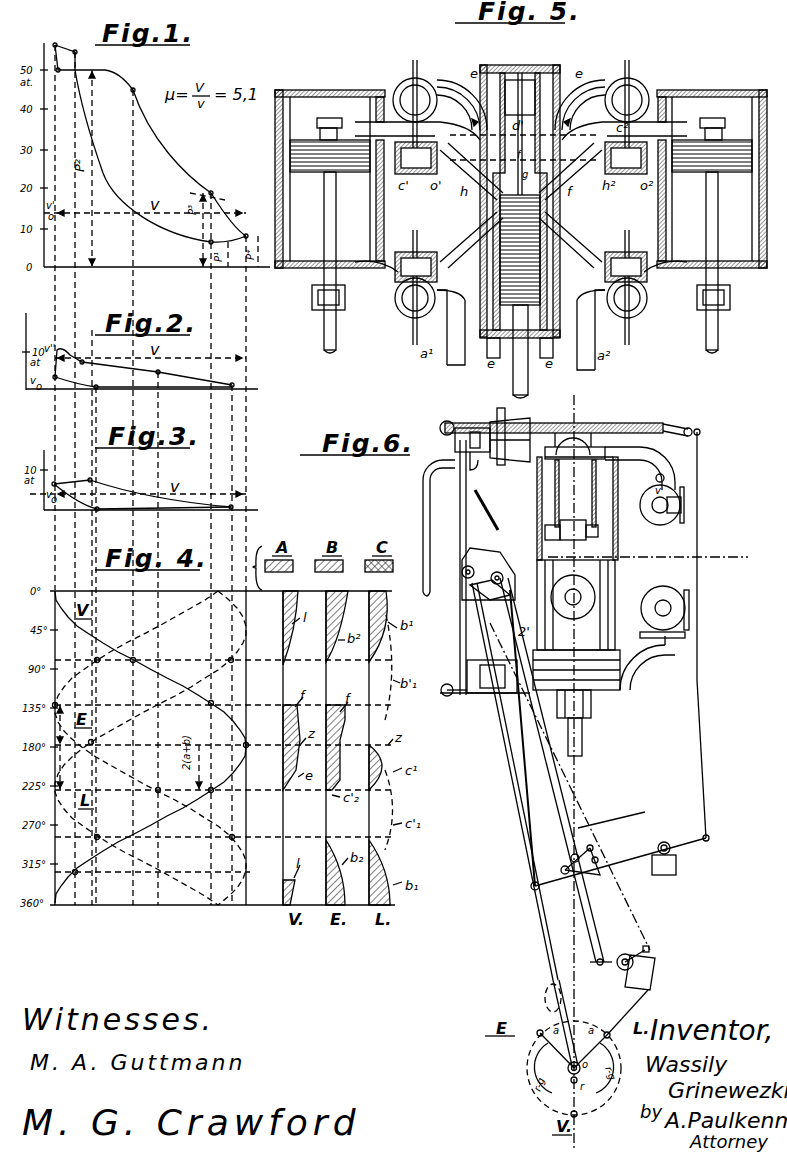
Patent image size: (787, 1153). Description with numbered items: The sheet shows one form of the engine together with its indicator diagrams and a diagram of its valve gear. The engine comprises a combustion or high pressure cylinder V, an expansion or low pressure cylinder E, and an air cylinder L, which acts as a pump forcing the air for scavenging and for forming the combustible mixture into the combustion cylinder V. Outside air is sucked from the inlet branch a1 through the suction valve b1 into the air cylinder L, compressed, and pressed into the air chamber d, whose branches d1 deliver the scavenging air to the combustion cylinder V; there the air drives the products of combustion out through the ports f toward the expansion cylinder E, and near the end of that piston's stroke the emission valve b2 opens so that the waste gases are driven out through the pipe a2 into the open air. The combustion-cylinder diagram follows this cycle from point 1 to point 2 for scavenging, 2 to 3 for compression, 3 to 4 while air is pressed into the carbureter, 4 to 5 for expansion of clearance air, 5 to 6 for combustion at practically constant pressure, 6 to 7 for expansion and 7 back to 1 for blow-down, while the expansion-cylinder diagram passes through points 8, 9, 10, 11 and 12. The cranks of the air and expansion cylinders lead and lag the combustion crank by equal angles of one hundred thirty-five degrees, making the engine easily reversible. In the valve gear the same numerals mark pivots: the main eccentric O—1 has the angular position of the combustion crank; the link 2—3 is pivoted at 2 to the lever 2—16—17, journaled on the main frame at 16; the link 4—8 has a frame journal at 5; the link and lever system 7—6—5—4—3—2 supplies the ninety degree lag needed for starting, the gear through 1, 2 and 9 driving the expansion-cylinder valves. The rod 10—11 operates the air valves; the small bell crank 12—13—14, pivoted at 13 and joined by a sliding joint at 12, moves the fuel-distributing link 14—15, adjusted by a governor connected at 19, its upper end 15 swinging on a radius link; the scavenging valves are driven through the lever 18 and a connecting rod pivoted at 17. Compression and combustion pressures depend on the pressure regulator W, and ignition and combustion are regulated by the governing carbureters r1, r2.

In FIG. 1, the diagram point / main eccentric point 1 is at (252, 228).
In FIG. 4, the diagram point / main eccentric point 1 is at (251, 751).
In FIG. 1, the pivot of link 2—3 on lever 2—16—17 2 is at (215, 235).
In FIG. 4, the pivot of link 2—3 on lever 2—16—17 2 is at (212, 799).
In FIG. 6, the pivot of link 2—3 on lever 2—16—17 2 is at (539, 891).
In FIG. 1, the link 2—3 end point 3 is at (81, 46).
In FIG. 4, the link 2—3 end point 3 is at (76, 882).
In FIG. 6, the link 2—3 end point 3 is at (594, 841).
In FIG. 1, the link 4—8 end point 4 is at (54, 36).
In FIG. 6, the link 4—8 end point 4 is at (598, 963).
In FIG. 1, the frame journal of link 4—8 5 is at (62, 77).
In FIG. 6, the frame journal of link 4—8 5 is at (625, 954).
In FIG. 1, the lever system point 6 is at (125, 90).
In FIG. 4, the lever system point 6 is at (134, 669).
In FIG. 6, the lever system point 6 is at (631, 995).
In FIG. 1, the lever system point 7 is at (215, 183).
In FIG. 4, the lever system point 7 is at (215, 695).
In FIG. 6, the lever system point 7 is at (552, 1004).
In FIG. 2, the link 4—8 end point 8 is at (60, 369).
In FIG. 4, the link 4—8 end point 8 is at (50, 696).
In FIG. 6, the link 4—8 end point 8 is at (644, 950).
In FIG. 2, the gear point 9 is at (88, 355).
In FIG. 6, the gear point 9 is at (473, 566).
In FIG. 2, the rod 10—11 end 10 is at (166, 365).
In FIG. 4, the rod 10—11 end 10 is at (158, 799).
In FIG. 6, the rod 10—11 end 10 is at (569, 861).
In FIG. 2, the rod 10—11 end 11 is at (234, 377).
In FIG. 4, the rod 10—11 end 11 is at (228, 845).
In FIG. 6, the rod 10—11 end 11 is at (508, 570).
In FIG. 2, the sliding joint of bell crank 12—13—14 12 is at (100, 379).
In FIG. 4, the sliding joint of bell crank 12—13—14 12 is at (106, 668).
In FIG. 6, the sliding joint of bell crank 12—13—14 12 is at (569, 851).
In FIG. 3, the bell crank pivot 13 is at (224, 500).
In FIG. 4, the bell crank pivot 13 is at (225, 653).
In FIG. 6, the bell crank pivot 13 is at (608, 853).
In FIG. 3, the arm 13—14 end 14 is at (92, 472).
In FIG. 4, the arm 13—14 end 14 is at (86, 735).
In FIG. 6, the arm 13—14 end 14 is at (592, 868).
In FIG. 3, the upper end of link 14— 15 is at (62, 475).
In FIG. 6, the upper end of link 14— 15 is at (490, 595).
In FIG. 3, the frame journal of lever 2—16—17 16 is at (106, 502).
In FIG. 4, the frame journal of lever 2—16—17 16 is at (92, 845).
In FIG. 6, the frame journal of lever 2—16—17 16 is at (664, 850).
In FIG. 6, the pivot of connecting rod on lever 2—16— 17 is at (716, 843).
In FIG. 6, the lever 18 is at (691, 552).
In FIG. 6, the governor connection 19 is at (611, 817).
In FIG. 5, the air cylinder L is at (330, 221).
In FIG. 5, the expansion cylinder E is at (712, 221).
In FIG. 5, the combustion cylinder V is at (525, 231).
In FIG. 5, the air inlet branch a1 is at (448, 96).
In FIG. 5, the exhaust pipe a2 is at (600, 96).
In FIG. 5, the air inlet valve b1 is at (398, 308).
In FIG. 5, the emission valve b2 is at (646, 308).
In FIG. 6, the air chamber d is at (640, 468).
In FIG. 6, the air chamber branch d1 is at (684, 505).
In FIG. 6, the emission ports f is at (571, 521).
In FIG. 6, the pressure regulator W is at (439, 528).
In FIG. 6, the governing carbureter r1 is at (492, 439).
In FIG. 6, the governing carbureter r2 is at (485, 670).